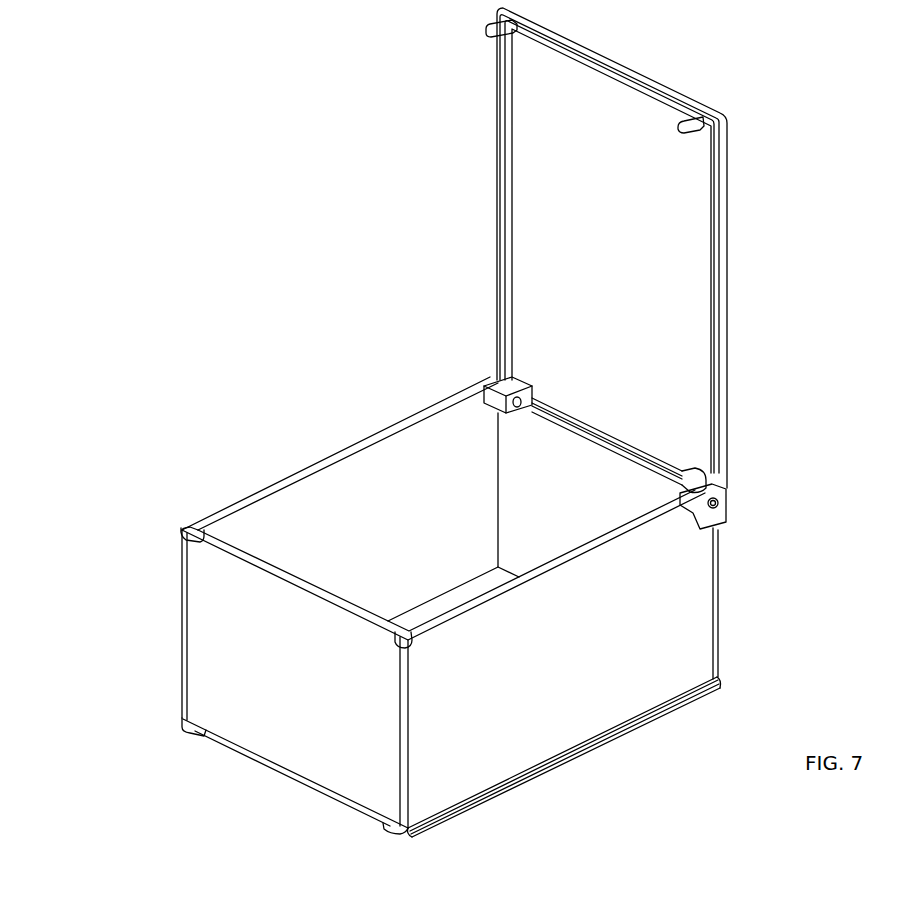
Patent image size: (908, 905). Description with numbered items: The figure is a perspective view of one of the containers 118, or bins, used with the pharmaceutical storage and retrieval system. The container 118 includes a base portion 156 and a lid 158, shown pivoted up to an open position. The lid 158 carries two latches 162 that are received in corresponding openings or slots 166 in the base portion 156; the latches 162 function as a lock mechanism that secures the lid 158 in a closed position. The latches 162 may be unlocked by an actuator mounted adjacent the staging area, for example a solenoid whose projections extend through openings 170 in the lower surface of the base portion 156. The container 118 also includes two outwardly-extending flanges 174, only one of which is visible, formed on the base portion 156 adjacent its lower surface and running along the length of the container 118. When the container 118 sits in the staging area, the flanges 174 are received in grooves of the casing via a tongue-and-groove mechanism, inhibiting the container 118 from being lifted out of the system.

The container 118 is at (458, 430).
The base portion 156 is at (399, 615).
The lid 158 is at (617, 268).
The latches 162 is at (492, 30).
The openings or slots 166 is at (197, 533).
The openings 170 is at (202, 728).
The flanges 174 is at (597, 742).